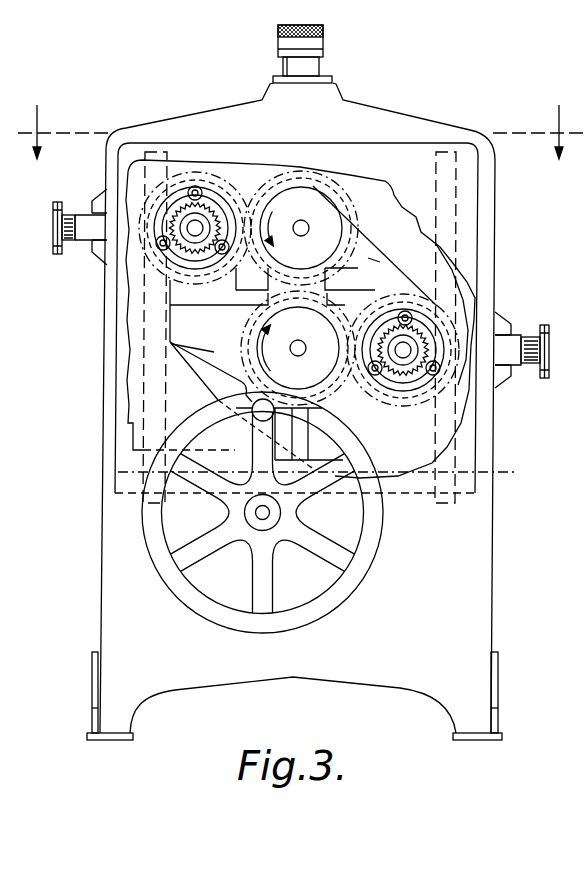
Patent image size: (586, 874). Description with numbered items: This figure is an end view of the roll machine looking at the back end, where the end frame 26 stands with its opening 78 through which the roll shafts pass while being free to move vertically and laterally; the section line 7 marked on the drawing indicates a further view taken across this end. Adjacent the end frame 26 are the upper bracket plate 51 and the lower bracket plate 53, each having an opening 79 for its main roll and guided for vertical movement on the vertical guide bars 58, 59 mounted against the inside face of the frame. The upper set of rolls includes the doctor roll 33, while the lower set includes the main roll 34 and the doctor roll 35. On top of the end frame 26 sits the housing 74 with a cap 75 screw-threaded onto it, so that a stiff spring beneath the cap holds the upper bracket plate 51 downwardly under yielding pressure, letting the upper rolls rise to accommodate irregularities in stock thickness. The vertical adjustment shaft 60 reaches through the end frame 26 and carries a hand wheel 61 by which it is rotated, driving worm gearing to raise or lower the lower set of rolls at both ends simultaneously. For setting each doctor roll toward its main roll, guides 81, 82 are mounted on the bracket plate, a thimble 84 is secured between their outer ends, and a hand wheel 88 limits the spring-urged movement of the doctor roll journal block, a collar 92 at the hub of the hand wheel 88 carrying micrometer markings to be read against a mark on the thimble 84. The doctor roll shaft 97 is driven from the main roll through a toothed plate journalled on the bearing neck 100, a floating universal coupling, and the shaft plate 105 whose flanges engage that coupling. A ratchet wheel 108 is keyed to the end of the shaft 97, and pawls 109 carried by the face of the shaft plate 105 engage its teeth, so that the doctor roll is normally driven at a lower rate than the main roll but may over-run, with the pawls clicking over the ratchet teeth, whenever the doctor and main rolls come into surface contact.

The section line 7- 7 is at (296, 137).
The end frame 26 is at (294, 411).
The doctor roll 33 is at (163, 268).
The main roll 34 is at (243, 340).
The doctor roll 35 is at (346, 188).
The upper bracket plate 51 is at (368, 258).
The lower bracket plate 53 is at (213, 352).
The guide bar 58 is at (330, 472).
The guide bar 59 is at (140, 437).
The vertical adjustment shaft 60 is at (258, 518).
The hand wheel 61 is at (380, 561).
The housing 74 is at (297, 65).
The cap 75 is at (278, 42).
The opening 78 is at (366, 243).
The opening 79 is at (273, 273).
The guide 81 is at (100, 254).
The guide 82 is at (100, 208).
The thimble 84 is at (95, 244).
The hand wheel 88 is at (53, 218).
The collar 92 is at (69, 216).
The doctor roll shaft 97 is at (198, 226).
The bearing neck 100 is at (216, 291).
The shaft plate 105 is at (213, 205).
The ratchet wheel 108 is at (236, 205).
The pawl 109 is at (199, 187).